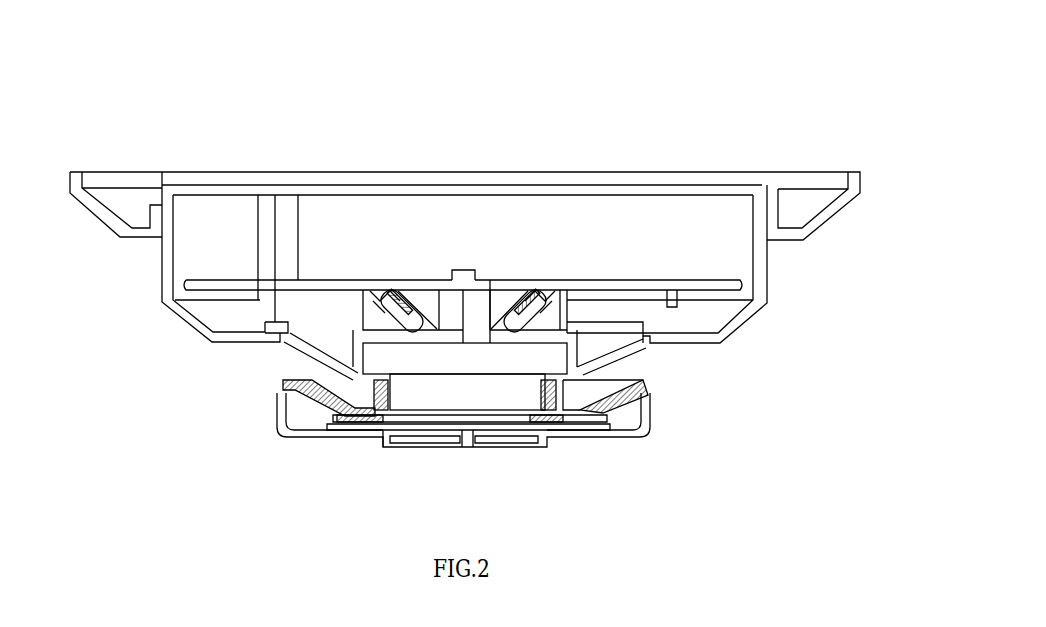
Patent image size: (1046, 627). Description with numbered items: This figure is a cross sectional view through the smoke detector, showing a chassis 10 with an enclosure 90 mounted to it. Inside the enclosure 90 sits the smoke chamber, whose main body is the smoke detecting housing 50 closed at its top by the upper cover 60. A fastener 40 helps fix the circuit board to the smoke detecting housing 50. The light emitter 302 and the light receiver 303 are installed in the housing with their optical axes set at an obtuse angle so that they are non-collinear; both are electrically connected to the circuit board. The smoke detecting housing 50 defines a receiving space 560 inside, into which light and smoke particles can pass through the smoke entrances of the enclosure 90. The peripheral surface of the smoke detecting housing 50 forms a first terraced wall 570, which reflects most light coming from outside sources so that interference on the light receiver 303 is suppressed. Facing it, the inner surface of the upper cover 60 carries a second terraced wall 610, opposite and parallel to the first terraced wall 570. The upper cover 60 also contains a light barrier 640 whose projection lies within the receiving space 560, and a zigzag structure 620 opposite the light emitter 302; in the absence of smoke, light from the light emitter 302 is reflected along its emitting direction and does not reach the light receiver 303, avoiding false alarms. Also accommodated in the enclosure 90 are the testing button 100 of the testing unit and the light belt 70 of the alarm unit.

The chassis 10 is at (122, 238).
The fastener 40 is at (432, 303).
The smoke detecting housing 50 is at (300, 345).
The upper cover 60 is at (280, 380).
The light belt 70 is at (327, 423).
The enclosure 90 is at (292, 438).
The testing button 100 is at (420, 445).
The light emitter 302 is at (548, 290).
The light receiver 303 is at (393, 307).
The receiving space 560 is at (484, 360).
The first terraced wall 570 is at (630, 353).
The second terraced wall 610 is at (625, 403).
The zigzag structure 620 is at (590, 430).
The light barrier 640 is at (520, 440).